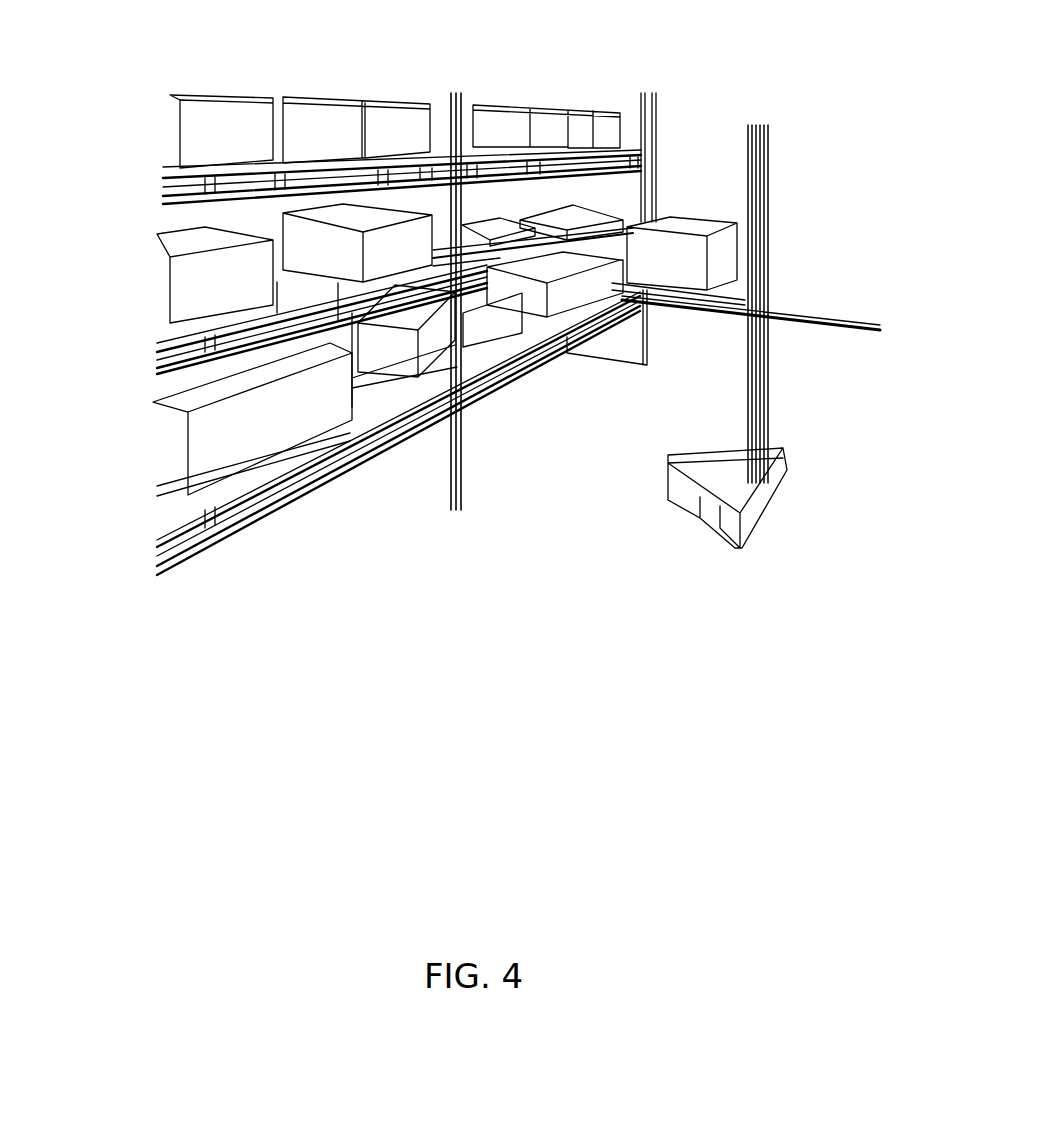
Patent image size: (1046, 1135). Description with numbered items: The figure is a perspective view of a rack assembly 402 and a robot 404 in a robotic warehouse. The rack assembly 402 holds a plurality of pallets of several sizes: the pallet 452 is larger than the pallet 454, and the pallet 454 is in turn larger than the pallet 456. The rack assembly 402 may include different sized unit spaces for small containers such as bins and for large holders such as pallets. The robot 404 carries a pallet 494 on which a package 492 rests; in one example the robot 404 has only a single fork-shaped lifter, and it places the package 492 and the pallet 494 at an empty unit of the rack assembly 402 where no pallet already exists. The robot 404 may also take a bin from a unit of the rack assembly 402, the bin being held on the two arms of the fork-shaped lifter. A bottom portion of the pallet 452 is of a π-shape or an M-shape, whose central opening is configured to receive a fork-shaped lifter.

The rack assembly 402 is at (677, 93).
The robot 404 is at (777, 377).
The pallet 452 is at (147, 522).
The pallet 454 is at (140, 345).
The pallet 456 is at (470, 147).
The package 492 is at (692, 225).
The pallet 494 is at (690, 297).